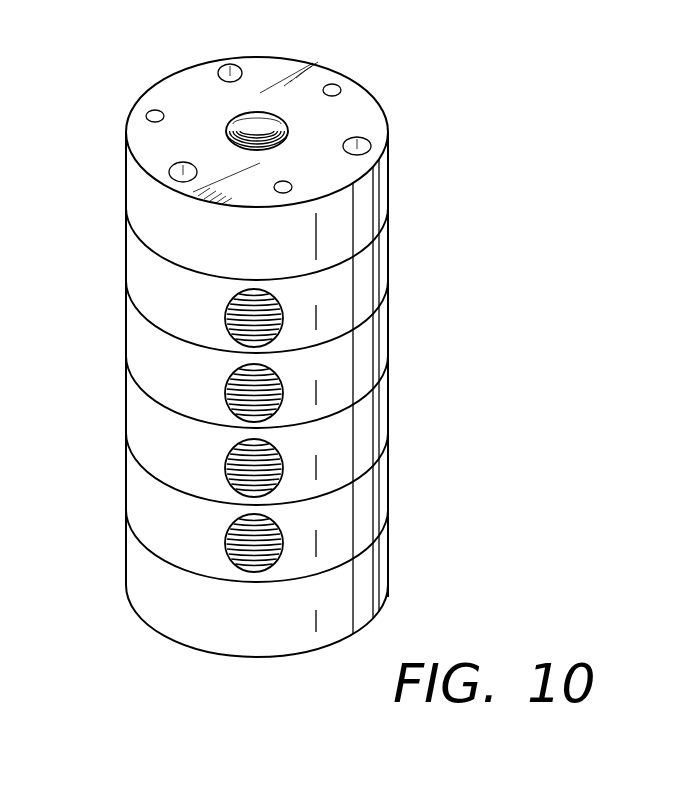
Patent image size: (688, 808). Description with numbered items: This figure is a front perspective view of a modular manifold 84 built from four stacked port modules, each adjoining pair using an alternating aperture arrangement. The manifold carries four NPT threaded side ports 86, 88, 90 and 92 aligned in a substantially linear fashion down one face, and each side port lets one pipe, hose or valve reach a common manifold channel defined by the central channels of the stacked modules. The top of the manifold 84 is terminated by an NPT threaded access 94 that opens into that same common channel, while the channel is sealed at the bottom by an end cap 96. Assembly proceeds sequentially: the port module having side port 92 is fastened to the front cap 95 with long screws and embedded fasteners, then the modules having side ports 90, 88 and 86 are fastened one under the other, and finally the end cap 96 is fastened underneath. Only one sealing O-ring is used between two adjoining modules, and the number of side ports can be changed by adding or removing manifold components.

The modular manifold 84 is at (457, 205).
The NPT threaded side port 86 is at (250, 539).
The NPT threaded side port 88 is at (250, 464).
The NPT threaded side port 90 is at (250, 389).
The NPT threaded side port 92 is at (250, 314).
The NPT threaded access 94 is at (257, 127).
The front cap 95 is at (140, 188).
The end cap 96 is at (198, 608).